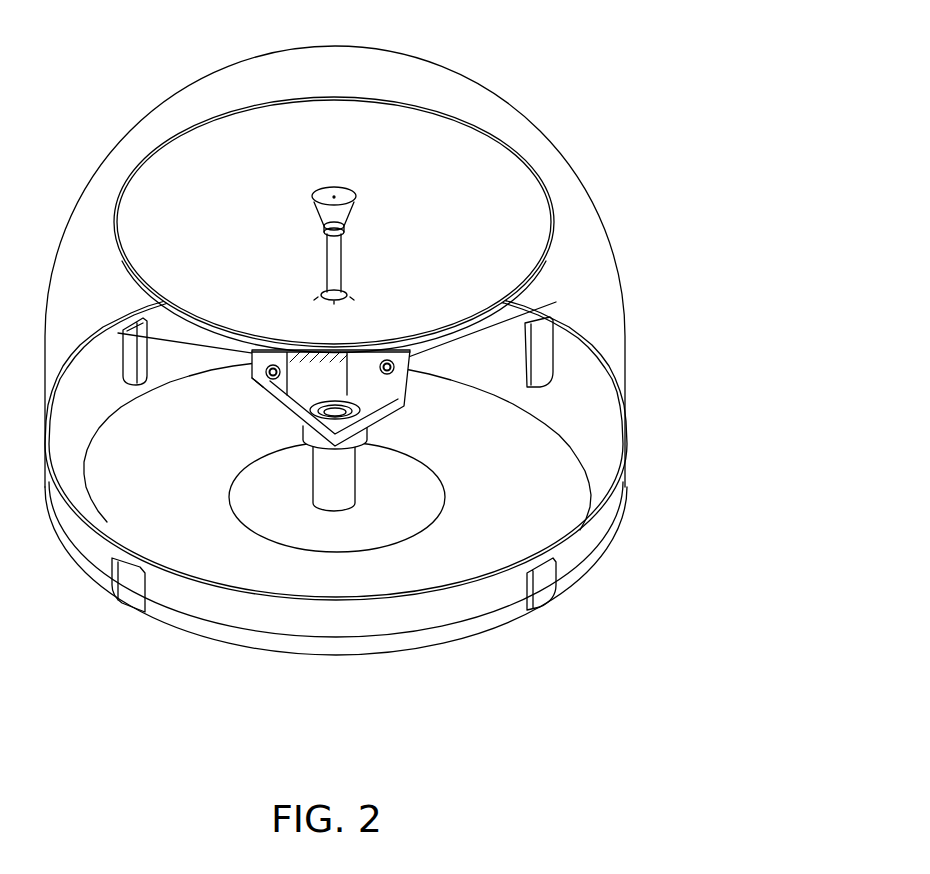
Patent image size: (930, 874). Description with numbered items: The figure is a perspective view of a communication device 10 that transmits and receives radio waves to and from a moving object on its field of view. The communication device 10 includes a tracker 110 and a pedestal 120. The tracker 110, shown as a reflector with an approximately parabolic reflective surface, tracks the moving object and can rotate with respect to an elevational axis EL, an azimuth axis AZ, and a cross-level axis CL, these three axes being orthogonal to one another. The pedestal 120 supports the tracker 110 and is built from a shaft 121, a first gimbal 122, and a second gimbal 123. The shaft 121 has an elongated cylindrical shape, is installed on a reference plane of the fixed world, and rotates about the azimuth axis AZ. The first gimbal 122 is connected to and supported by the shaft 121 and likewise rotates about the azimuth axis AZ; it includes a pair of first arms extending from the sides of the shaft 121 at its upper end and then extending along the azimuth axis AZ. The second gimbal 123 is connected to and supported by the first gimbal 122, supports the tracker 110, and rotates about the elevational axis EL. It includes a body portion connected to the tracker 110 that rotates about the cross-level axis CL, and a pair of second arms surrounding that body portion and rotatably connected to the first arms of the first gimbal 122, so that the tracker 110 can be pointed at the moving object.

The communication device 10 is at (512, 82).
The tracker 110 is at (505, 177).
The pedestal 120 is at (404, 438).
The shaft 121 is at (323, 483).
The first gimbal 122 is at (393, 400).
The second gimbal 123 is at (318, 378).
The cross-level axis CL is at (268, 376).
The elevational axis EL is at (394, 368).
The azimuth axis AZ is at (334, 303).